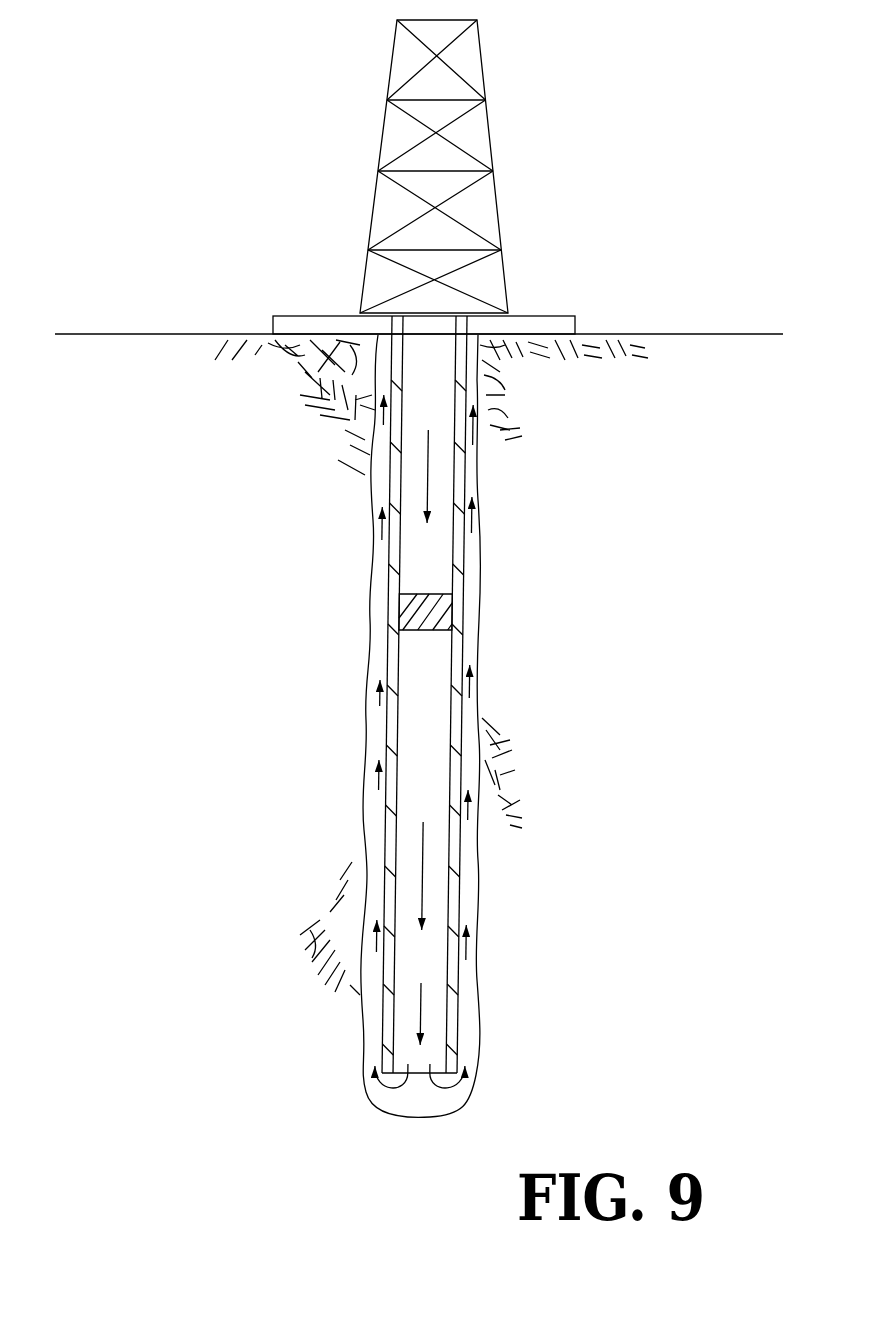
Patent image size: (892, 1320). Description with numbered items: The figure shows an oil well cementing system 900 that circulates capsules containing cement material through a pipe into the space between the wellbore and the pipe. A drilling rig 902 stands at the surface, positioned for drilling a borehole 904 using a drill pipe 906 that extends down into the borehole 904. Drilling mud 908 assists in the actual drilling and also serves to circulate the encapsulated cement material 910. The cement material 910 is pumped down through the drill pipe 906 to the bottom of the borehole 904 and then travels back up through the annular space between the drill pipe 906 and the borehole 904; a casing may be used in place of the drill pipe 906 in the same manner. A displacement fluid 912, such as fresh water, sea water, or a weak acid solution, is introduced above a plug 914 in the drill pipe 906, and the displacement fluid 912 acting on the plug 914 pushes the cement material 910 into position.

The oil well cementing system 900 is at (608, 112).
The drilling rig 902 is at (382, 135).
The borehole 904 is at (373, 492).
The drill pipe 906 is at (387, 720).
The drilling mud 908 is at (422, 1015).
The encapsulated cement material 910 is at (423, 890).
The displacement fluid 912 is at (427, 475).
The plug 914 is at (443, 610).